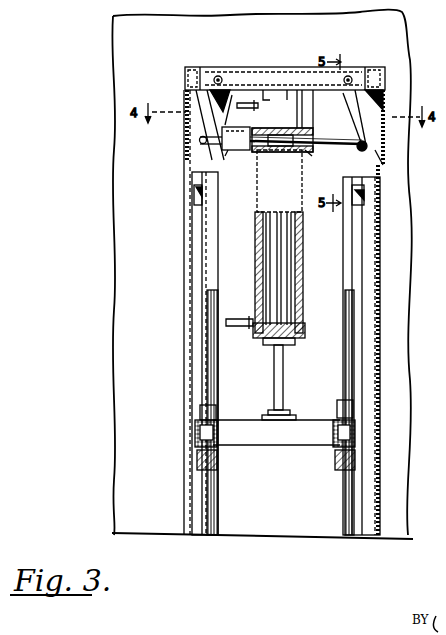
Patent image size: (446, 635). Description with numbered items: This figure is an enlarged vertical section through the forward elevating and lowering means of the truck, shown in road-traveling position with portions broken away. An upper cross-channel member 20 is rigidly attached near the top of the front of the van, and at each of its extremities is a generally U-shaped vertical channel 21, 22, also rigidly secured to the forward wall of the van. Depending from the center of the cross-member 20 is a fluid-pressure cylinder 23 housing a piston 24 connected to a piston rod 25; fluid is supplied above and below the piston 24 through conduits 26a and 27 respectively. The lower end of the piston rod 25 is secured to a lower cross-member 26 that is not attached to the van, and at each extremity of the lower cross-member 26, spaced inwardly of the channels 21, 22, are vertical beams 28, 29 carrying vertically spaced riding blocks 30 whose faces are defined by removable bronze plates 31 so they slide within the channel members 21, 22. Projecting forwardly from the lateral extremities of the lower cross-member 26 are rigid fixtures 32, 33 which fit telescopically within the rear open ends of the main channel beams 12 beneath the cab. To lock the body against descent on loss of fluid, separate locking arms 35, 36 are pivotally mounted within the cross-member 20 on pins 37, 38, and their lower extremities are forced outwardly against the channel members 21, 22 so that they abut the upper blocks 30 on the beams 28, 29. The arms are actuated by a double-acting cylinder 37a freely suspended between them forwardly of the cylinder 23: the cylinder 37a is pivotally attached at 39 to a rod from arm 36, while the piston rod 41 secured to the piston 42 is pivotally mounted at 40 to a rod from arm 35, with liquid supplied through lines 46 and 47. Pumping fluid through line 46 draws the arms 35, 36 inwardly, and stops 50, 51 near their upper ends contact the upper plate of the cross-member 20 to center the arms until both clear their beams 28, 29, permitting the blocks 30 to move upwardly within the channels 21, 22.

The main channel beams 12 is at (217, 412).
The upper cross-channel member 20 is at (356, 72).
The vertical channel 21 is at (378, 164).
The vertical channel 22 is at (192, 156).
The fluid-pressure cylinder 23 is at (303, 218).
The piston 24 is at (256, 218).
The piston rod 25 is at (284, 366).
The lower cross-member 26 is at (293, 447).
The conduit 26a is at (240, 125).
The conduit 27 is at (237, 327).
The vertical beam 28 is at (331, 405).
The vertical beam 29 is at (216, 388).
The riding blocks 30 is at (194, 188).
The removable bronze plates 31 is at (184, 176).
The fixture 32 is at (356, 416).
The fixture 33 is at (196, 418).
The locking arm 35 is at (383, 92).
The locking arm 36 is at (186, 92).
The pin 37 is at (349, 75).
The cylinder 37a is at (266, 152).
The pin 38 is at (217, 75).
The pivotal attachment 39 is at (199, 139).
The pivotal mounting 40 is at (368, 146).
The piston rod 41 is at (337, 143).
The piston 42 is at (305, 131).
The line 46 is at (310, 153).
The line 47 is at (228, 152).
The stop 50 is at (350, 140).
The stop 51 is at (233, 94).